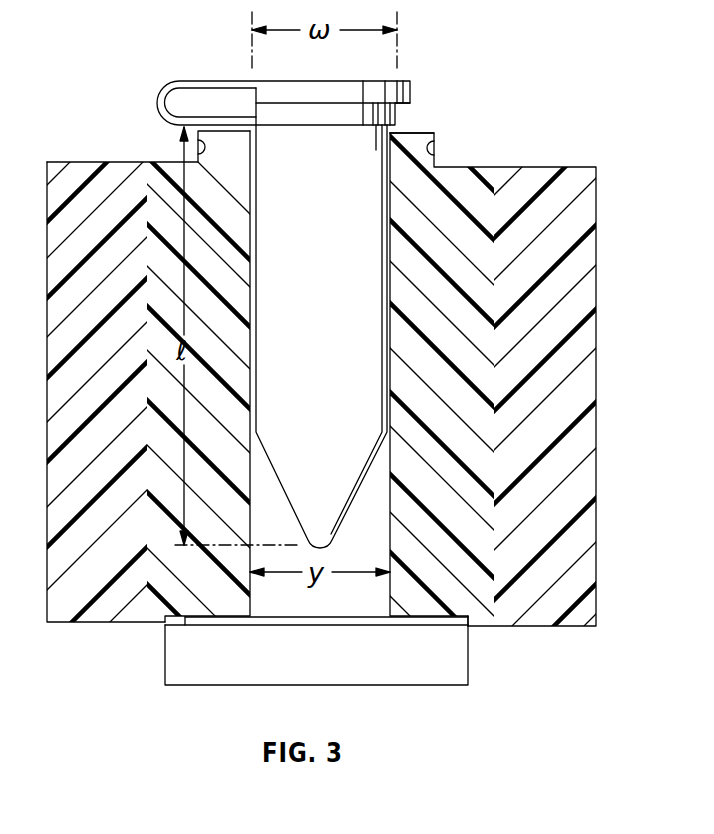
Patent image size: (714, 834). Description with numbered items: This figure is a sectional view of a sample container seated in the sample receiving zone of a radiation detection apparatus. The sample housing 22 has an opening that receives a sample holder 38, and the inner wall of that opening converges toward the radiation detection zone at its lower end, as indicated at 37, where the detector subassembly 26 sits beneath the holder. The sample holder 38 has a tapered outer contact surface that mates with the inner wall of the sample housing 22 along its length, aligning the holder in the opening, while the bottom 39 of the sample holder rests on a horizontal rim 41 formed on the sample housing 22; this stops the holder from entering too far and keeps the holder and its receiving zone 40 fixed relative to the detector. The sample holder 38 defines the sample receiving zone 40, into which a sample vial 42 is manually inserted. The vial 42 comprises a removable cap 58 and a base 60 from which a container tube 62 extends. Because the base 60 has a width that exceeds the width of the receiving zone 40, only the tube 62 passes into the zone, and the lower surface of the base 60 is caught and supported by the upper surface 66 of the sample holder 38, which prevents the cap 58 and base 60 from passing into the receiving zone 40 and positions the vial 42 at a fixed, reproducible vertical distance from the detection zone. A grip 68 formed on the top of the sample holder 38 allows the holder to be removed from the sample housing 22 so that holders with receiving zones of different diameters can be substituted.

The sample housing 22 is at (357, 417).
The detector subassembly 26 is at (478, 670).
The converging inner wall 37 is at (490, 575).
The sample holder 38 is at (452, 246).
The bottom of the sample holder 39 is at (407, 629).
The sample receiving zone 40 is at (370, 598).
The horizontal rim 41 is at (458, 623).
The sample vial 42 is at (283, 294).
The removable cap 58 is at (412, 88).
The base 60 is at (398, 115).
The container tube 62 is at (393, 300).
The upper surface of the sample holder 66 is at (437, 131).
The grip 68 is at (437, 149).